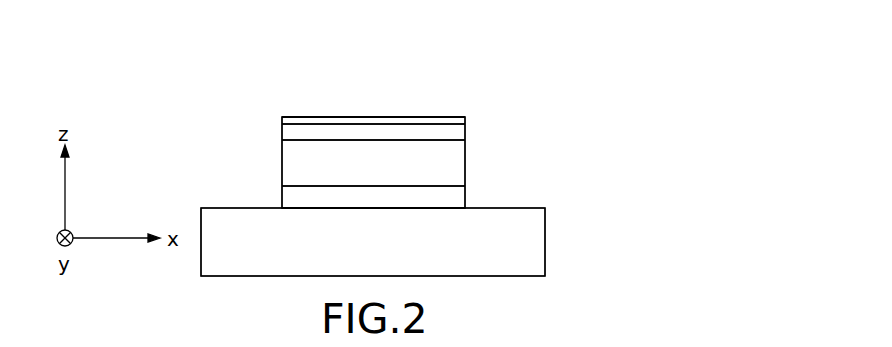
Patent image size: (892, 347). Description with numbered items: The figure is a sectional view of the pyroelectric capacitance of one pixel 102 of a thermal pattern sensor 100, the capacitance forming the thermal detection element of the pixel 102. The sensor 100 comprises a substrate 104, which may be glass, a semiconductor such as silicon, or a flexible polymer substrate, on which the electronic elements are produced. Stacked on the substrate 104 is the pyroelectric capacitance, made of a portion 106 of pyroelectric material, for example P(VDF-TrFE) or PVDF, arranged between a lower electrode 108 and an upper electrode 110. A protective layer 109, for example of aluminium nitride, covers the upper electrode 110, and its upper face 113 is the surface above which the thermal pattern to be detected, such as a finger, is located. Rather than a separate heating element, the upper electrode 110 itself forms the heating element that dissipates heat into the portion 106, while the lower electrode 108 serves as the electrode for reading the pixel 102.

The thermal pattern sensor 100 is at (590, 97).
The pixel 102 is at (478, 97).
The substrate 104 is at (532, 238).
The portion of pyroelectric material 106 is at (452, 160).
The lower electrode 108 is at (452, 197).
The protective layer 109 is at (410, 122).
The upper electrode 110 is at (288, 133).
The upper face 113 is at (324, 110).